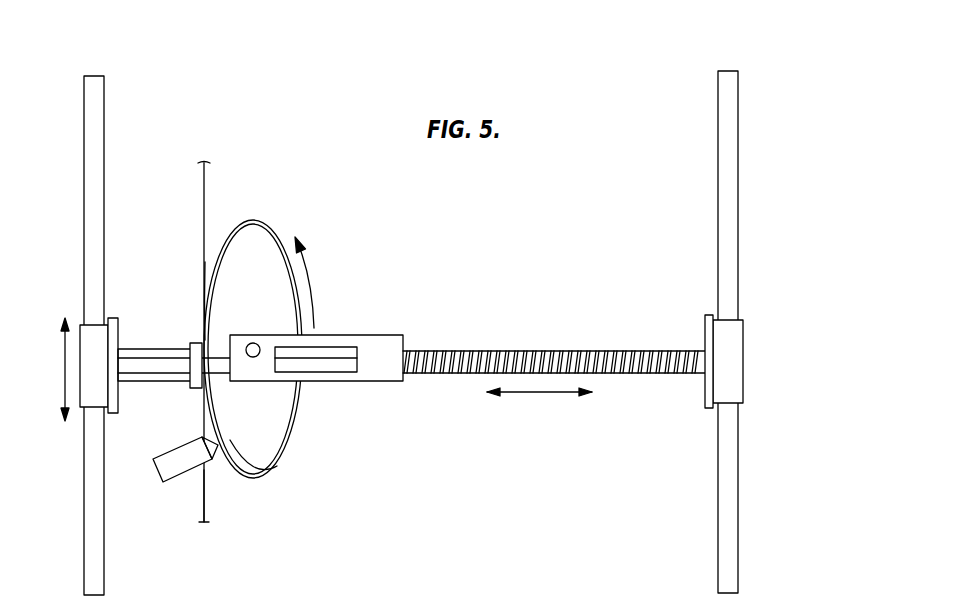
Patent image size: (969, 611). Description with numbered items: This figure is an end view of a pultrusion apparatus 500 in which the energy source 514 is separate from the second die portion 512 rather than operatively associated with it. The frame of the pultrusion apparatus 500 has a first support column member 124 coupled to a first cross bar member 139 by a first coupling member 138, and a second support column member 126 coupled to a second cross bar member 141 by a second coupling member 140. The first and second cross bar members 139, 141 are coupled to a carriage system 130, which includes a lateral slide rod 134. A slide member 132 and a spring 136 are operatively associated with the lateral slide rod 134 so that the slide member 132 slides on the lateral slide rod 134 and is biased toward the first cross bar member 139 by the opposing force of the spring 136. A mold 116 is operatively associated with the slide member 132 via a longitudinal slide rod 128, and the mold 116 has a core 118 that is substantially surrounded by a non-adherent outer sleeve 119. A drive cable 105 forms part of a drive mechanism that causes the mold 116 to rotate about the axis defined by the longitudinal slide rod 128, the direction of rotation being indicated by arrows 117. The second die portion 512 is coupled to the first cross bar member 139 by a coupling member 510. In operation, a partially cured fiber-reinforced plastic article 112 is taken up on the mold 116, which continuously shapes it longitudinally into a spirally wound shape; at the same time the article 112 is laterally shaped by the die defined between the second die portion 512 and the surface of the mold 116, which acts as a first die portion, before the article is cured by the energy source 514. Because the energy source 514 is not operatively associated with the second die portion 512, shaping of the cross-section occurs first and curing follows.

The pultrusion apparatus 500 is at (748, 55).
The first support column member 124 is at (103, 112).
The second support column member 126 is at (739, 147).
The first cross bar member 139 is at (116, 320).
The first coupling member 138 is at (82, 325).
The coupling member 510 is at (141, 350).
The second die portion 512 is at (194, 343).
The partially cured fiber-reinforced plastic article 112 is at (205, 181).
The drive cable 105 is at (209, 503).
The mold 116 is at (262, 226).
The core 118 is at (205, 263).
The outer sleeve 119 is at (277, 467).
The arrows 117 is at (308, 280).
The slide member 132 is at (403, 337).
The lateral slide rod 134 is at (348, 373).
The longitudinal slide rod 128 is at (257, 356).
The carriage system 130 is at (401, 452).
The spring 136 is at (507, 352).
The second coupling member 140 is at (743, 327).
The second cross bar member 141 is at (705, 323).
The energy source 514 is at (184, 480).